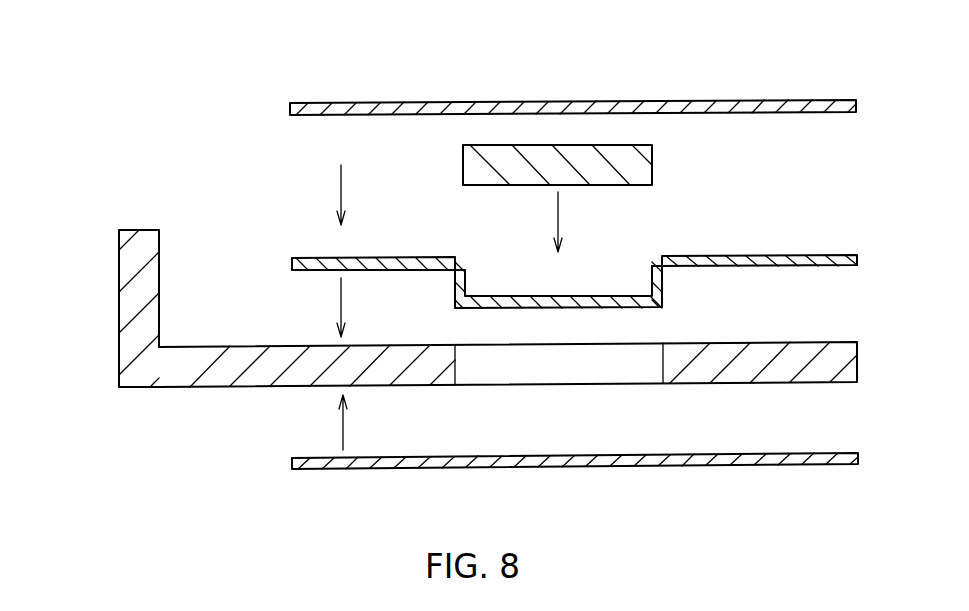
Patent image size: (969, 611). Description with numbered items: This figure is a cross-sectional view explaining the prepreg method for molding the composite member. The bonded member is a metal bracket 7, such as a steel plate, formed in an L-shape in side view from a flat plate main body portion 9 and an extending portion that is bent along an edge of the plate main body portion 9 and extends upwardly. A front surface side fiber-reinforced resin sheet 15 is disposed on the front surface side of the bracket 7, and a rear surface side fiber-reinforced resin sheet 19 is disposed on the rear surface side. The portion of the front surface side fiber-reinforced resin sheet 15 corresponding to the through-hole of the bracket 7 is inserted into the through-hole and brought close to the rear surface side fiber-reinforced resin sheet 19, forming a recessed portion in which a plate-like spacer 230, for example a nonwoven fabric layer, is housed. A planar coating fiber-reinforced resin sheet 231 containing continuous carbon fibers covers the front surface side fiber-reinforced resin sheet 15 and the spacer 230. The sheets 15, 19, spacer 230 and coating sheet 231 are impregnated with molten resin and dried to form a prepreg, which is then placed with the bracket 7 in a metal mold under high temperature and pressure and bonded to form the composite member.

The coating fiber-reinforced resin sheet 231 is at (733, 100).
The spacer 230 is at (652, 153).
The front surface side fiber-reinforced resin sheet 15 is at (748, 255).
The bracket 7 is at (119, 315).
The plate main body portion 9 is at (207, 388).
The rear surface side fiber-reinforced resin sheet 19 is at (662, 466).